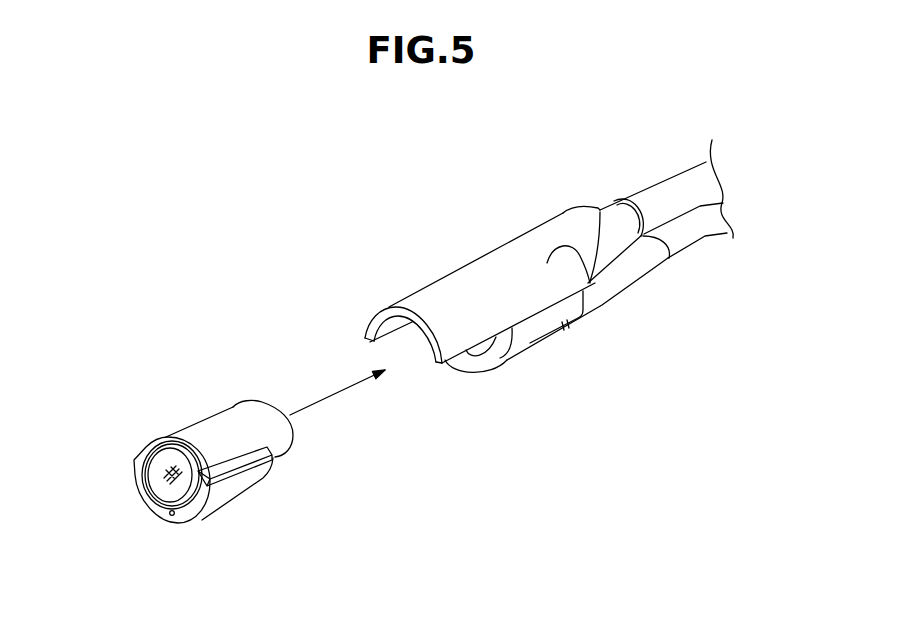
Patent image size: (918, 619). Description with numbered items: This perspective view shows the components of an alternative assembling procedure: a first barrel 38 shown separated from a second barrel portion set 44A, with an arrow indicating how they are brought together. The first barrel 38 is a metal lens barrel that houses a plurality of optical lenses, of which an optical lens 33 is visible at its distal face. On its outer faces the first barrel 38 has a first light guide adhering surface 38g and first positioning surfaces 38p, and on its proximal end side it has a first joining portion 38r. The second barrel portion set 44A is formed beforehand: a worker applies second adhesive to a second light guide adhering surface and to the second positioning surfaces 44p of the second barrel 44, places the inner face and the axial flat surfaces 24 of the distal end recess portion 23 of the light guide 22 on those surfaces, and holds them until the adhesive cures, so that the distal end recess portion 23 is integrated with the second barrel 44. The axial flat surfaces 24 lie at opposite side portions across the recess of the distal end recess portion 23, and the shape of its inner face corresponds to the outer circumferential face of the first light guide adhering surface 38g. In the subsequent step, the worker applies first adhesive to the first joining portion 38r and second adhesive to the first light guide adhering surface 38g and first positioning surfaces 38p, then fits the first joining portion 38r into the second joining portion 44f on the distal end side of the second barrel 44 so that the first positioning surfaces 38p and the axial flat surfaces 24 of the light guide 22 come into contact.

The first barrel 38 is at (283, 246).
The first positioning surface 38p is at (223, 462).
The first light guide adhering surface 38g is at (206, 415).
The first joining portion 38r is at (257, 410).
The optical lens 33 is at (158, 475).
The axial flat surface 24 is at (363, 343).
The distal end recess portion 23 is at (400, 330).
The second joining portion 44f is at (482, 342).
The second positioning surface 44p is at (517, 318).
The second barrel 44 is at (520, 343).
The light guide 22 is at (588, 272).
The second barrel portion set 44A is at (493, 509).